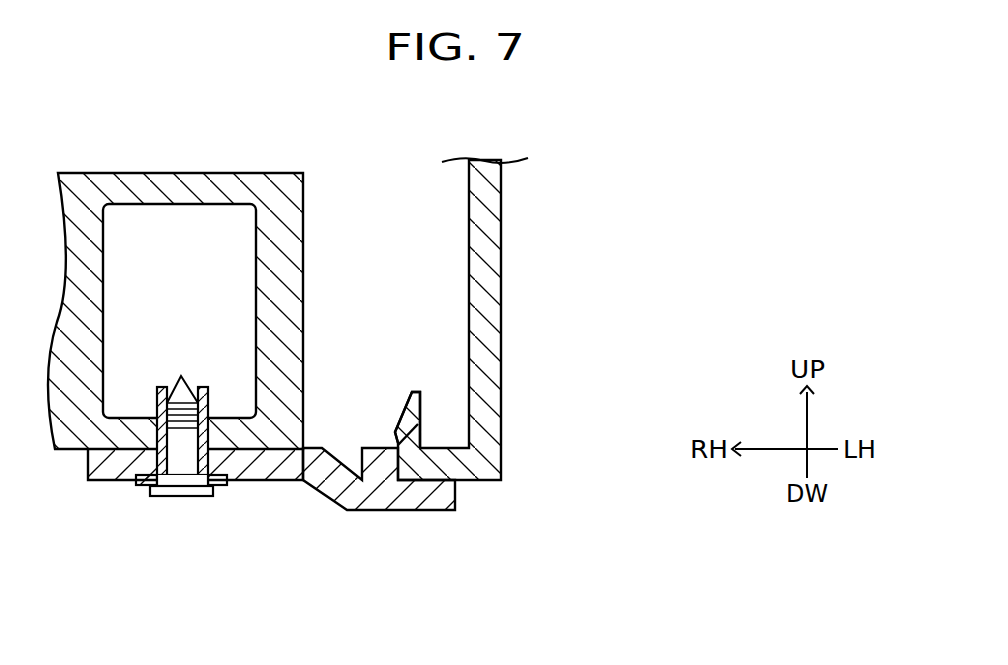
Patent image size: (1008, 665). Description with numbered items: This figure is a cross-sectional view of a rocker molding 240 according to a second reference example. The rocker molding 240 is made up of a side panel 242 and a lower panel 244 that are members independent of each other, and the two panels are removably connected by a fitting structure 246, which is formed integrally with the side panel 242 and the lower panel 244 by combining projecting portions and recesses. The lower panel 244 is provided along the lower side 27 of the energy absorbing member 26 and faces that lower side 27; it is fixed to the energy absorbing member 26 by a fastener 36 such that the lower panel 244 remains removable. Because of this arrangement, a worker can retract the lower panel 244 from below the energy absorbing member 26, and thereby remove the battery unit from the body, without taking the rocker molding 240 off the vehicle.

The energy absorbing member 26 is at (302, 188).
The lower side 27 is at (102, 481).
The fastener 36 is at (181, 480).
The rocker molding 240 is at (643, 182).
The side panel 242 is at (485, 322).
The lower panel 244 is at (320, 475).
The fitting structure 246 is at (412, 418).